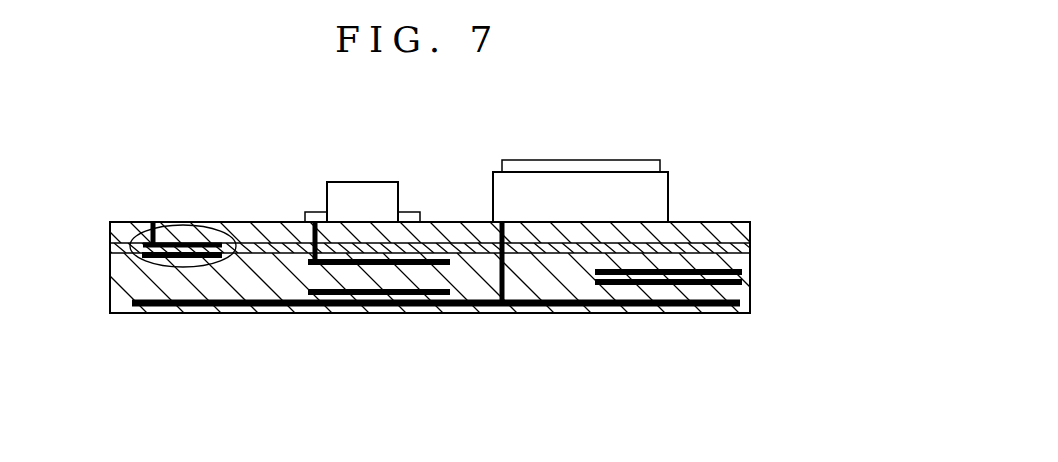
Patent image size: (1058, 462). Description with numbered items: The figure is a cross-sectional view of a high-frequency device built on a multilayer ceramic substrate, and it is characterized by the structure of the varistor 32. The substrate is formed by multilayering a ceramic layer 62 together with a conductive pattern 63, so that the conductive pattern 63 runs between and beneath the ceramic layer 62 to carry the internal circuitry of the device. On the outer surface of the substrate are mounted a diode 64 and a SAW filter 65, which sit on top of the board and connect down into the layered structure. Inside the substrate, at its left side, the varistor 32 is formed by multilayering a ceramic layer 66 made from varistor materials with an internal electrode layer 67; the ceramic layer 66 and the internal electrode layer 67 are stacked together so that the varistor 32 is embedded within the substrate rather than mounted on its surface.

The varistor 32 is at (200, 225).
The ceramic layer 62 is at (750, 300).
The conductive pattern 63 is at (718, 310).
The diode 64 is at (368, 193).
The SAW filter 65 is at (655, 195).
The ceramic layer formed from varistor materials 66 is at (113, 247).
The internal electrode layer 67 is at (108, 220).